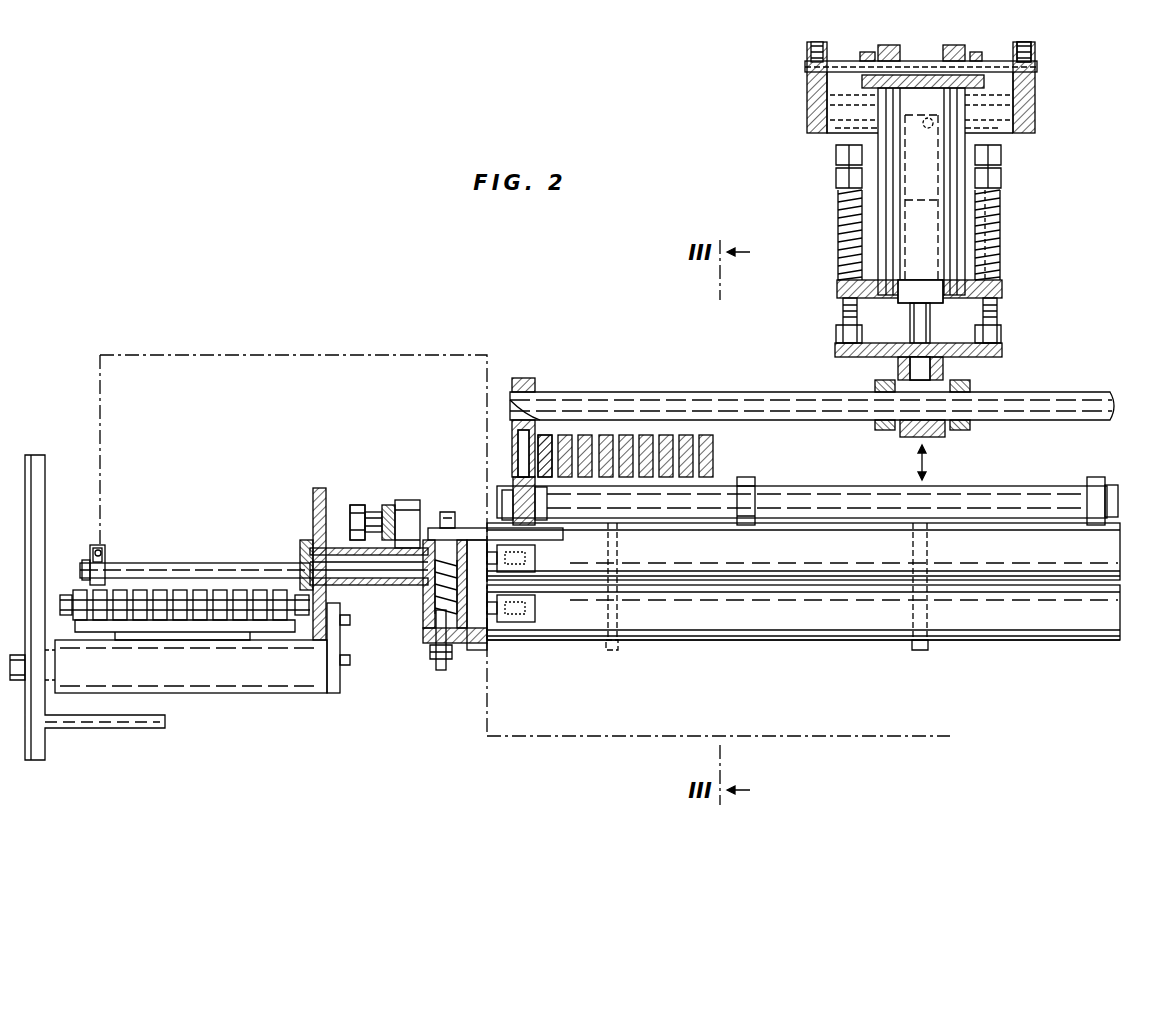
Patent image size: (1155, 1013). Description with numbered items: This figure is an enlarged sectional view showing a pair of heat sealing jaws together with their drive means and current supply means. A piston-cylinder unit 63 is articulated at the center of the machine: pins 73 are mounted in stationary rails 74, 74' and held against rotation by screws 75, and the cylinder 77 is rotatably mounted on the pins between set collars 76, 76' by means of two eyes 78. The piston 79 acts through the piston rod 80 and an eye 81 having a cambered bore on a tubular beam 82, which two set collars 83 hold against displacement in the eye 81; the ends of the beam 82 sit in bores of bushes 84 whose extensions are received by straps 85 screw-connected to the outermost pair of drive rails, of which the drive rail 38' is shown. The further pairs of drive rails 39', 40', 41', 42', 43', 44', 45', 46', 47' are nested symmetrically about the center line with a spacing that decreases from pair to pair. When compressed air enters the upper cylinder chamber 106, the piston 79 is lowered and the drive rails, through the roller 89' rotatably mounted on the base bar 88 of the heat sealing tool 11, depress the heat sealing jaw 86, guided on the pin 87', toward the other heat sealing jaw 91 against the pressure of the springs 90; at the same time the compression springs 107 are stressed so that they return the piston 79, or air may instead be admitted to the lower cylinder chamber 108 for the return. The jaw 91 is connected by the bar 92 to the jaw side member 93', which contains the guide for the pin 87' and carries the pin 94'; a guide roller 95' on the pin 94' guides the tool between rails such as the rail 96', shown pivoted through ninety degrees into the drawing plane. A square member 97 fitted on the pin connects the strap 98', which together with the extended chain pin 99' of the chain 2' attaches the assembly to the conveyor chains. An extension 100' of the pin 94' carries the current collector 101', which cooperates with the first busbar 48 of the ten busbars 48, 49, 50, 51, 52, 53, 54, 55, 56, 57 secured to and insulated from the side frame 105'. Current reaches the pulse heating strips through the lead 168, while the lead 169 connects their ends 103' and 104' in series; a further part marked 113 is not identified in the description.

The chain 2' is at (369, 494).
The heat sealing tool 11 is at (1002, 645).
The drive rail 38' is at (497, 452).
The drive rail 39' is at (553, 415).
The drive rail 40' is at (579, 400).
The drive rail 41' is at (594, 415).
The drive rail 42' is at (620, 400).
The drive rail 43' is at (632, 415).
The drive rail 44' is at (660, 400).
The drive rail 45' is at (674, 415).
The drive rail 46' is at (700, 400).
The drive rail 47' is at (714, 415).
The first busbar 48 is at (80, 590).
The busbar 49 is at (100, 590).
The busbar 50 is at (120, 590).
The busbar 51 is at (140, 590).
The busbar 52 is at (160, 590).
The busbar 53 is at (180, 590).
The busbar 54 is at (200, 590).
The busbar 55 is at (220, 590).
The busbar 56 is at (240, 590).
The busbar 57 is at (262, 590).
The piston-cylinder unit 63 is at (825, 208).
The pin 73 is at (1037, 66).
The stationary rail 74 is at (1048, 87).
The stationary rail 74' is at (794, 87).
The screw 75 is at (1033, 42).
The set collar 76 is at (974, 40).
The set collar 76' is at (853, 36).
The cylinder 77 is at (970, 108).
The eye 78 is at (900, 50).
The piston 79 is at (928, 128).
The piston rod 80 is at (932, 325).
The eye 81 is at (930, 437).
The tubular beam 82 is at (1062, 392).
The set collar 83 is at (875, 386).
The bush 84 is at (524, 378).
The strap 85 is at (512, 408).
The heat sealing jaw 86 is at (1018, 552).
The pin 87' is at (431, 657).
The base bar 88 is at (812, 518).
The roller 89' is at (530, 579).
The spring 90 is at (430, 636).
The heat sealing jaw 91 is at (778, 616).
The bar 92 is at (665, 633).
The jaw side member 93' is at (416, 591).
The pin 94' is at (347, 505).
The guide roller 95' is at (290, 534).
The rail 96' is at (304, 538).
The square member 97 is at (410, 586).
The strap 98' is at (393, 500).
The extended chain pin 99' is at (422, 502).
The extension 100' is at (75, 516).
The current collector 101' is at (74, 546).
The end of heating strip 103' is at (495, 508).
The end of heating strip 104' is at (505, 606).
The side frame 105' is at (98, 616).
The upper cylinder chamber 106 is at (840, 132).
The compression spring 107 is at (1000, 212).
The lower cylinder chamber 108 is at (1000, 240).
The slot 113 is at (975, 130).
The lead 168 is at (302, 356).
The lead 169 is at (855, 738).